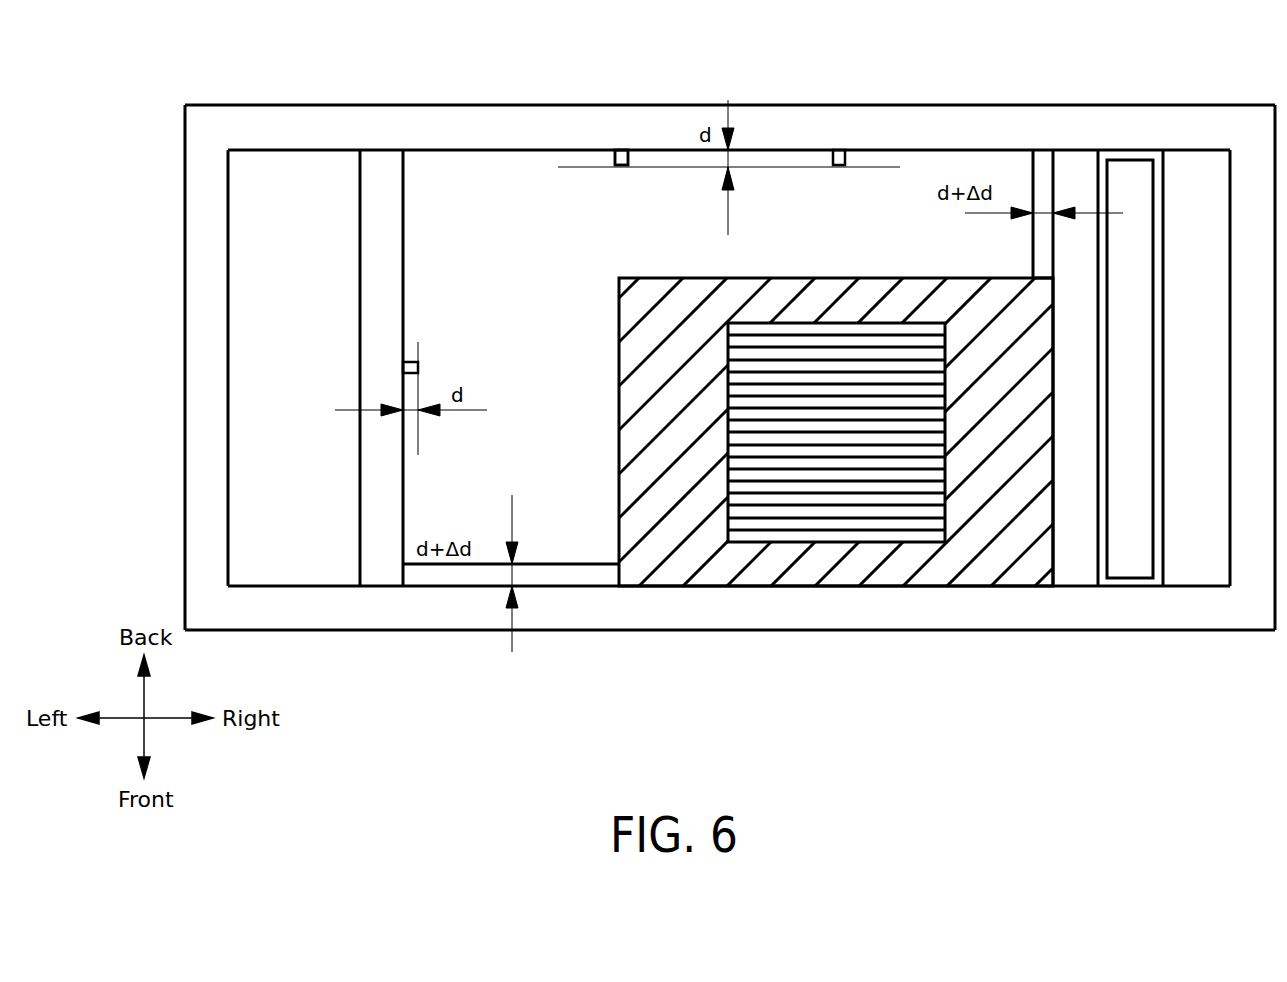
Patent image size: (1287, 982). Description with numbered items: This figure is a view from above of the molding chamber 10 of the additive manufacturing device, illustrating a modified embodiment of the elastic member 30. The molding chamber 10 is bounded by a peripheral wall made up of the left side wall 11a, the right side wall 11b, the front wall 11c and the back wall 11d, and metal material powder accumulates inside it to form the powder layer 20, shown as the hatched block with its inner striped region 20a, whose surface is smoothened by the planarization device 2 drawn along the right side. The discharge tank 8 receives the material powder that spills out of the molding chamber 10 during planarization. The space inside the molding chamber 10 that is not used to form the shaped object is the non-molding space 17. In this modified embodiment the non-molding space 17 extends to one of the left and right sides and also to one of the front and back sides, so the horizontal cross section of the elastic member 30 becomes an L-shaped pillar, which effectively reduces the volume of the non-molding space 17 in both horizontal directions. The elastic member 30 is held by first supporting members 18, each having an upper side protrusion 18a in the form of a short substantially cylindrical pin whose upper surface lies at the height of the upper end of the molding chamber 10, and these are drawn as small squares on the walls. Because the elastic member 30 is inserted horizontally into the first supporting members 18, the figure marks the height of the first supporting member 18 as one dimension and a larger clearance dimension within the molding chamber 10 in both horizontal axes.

The planarization device 2 is at (1126, 176).
The discharge tank 8 is at (316, 195).
The molding chamber 10 is at (973, 567).
The left side wall 11a is at (392, 519).
The right side wall 11b is at (1075, 550).
The front wall 11c is at (853, 608).
The back wall 11d is at (945, 125).
The non-molding space 17 is at (668, 540).
The first supporting member 18 is at (622, 152).
The upper side protrusion 18a is at (621, 157).
The powder layer 20 is at (818, 300).
The fin portion 20a is at (880, 353).
The elastic member 30 is at (510, 213).